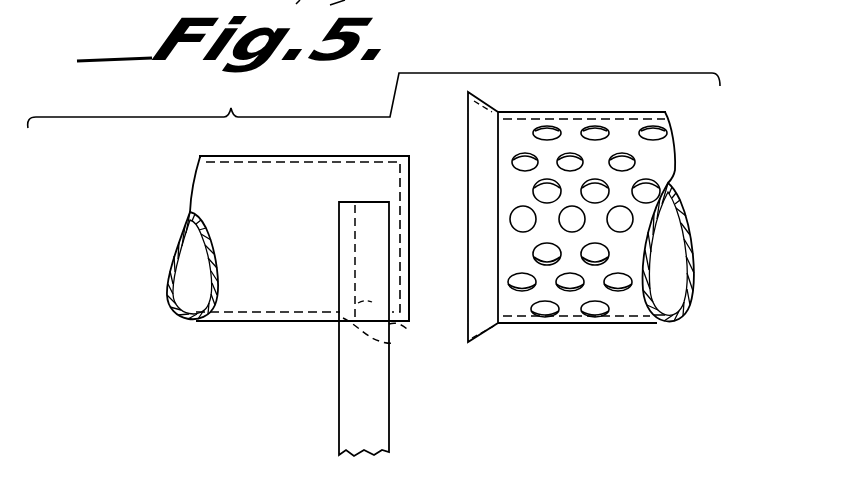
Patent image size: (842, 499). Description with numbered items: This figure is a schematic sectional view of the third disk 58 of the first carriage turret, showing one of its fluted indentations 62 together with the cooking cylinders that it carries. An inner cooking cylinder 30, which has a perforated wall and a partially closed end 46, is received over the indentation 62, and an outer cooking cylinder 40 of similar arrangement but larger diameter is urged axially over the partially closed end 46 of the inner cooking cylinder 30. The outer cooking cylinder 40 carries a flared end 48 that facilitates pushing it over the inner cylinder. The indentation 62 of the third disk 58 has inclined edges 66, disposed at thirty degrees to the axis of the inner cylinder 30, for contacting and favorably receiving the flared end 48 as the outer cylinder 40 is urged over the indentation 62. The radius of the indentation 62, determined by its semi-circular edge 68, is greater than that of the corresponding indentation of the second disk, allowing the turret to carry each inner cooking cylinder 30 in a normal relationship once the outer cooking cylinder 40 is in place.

The inner cooking cylinder 30 is at (223, 153).
The outer cooking cylinder 40 is at (645, 111).
The partially closed end 46 is at (437, 150).
The flared end 48 is at (487, 102).
The third disk 58 is at (348, 412).
The indentation 62 is at (287, 333).
The inclined edge 66 is at (397, 332).
The semi-circular edge 68 is at (350, 234).